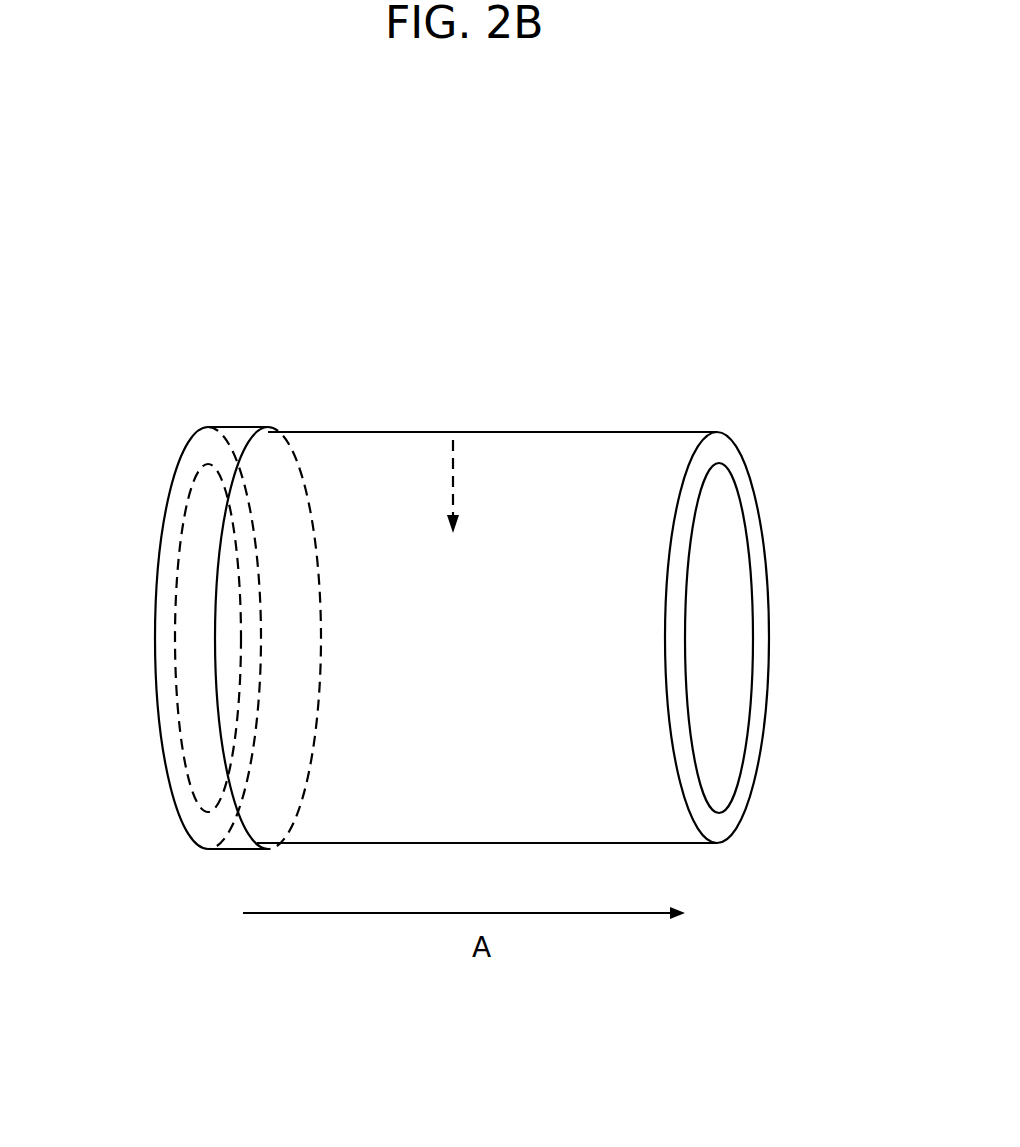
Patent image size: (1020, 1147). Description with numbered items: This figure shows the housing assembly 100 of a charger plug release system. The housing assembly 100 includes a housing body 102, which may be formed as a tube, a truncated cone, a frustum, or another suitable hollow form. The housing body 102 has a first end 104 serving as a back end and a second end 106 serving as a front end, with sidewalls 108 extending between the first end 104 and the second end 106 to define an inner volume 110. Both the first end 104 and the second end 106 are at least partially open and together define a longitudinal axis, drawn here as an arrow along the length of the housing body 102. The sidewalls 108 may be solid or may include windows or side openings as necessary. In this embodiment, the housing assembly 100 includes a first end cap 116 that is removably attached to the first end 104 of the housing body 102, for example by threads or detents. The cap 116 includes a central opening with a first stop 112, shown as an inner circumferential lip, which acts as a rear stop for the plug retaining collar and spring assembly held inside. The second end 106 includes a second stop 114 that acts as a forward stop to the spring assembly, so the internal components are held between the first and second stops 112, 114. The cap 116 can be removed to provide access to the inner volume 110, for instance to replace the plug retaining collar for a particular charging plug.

The housing assembly 100 is at (700, 180).
The housing body 102 is at (355, 432).
The first end 104 is at (205, 432).
The second end 106 is at (757, 514).
The sidewalls 108 is at (412, 465).
The inner volume 110 is at (453, 432).
The first stop 112 is at (177, 708).
The second stop 114 is at (752, 580).
The first end cap 116 is at (243, 428).